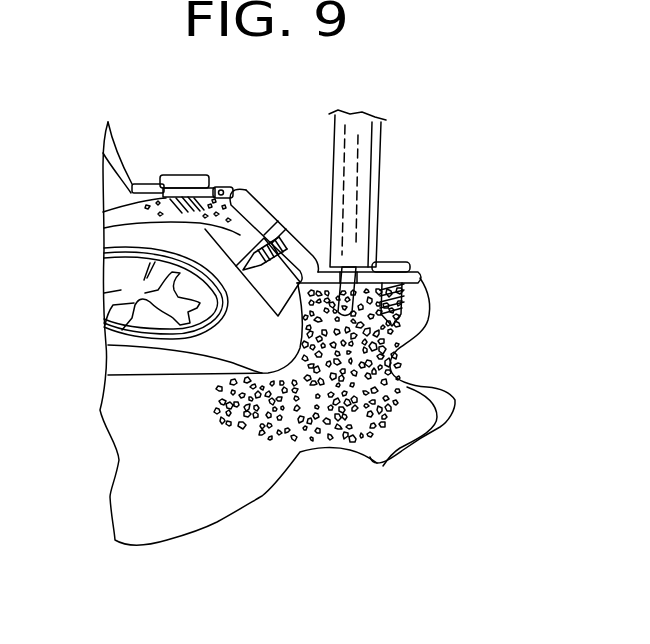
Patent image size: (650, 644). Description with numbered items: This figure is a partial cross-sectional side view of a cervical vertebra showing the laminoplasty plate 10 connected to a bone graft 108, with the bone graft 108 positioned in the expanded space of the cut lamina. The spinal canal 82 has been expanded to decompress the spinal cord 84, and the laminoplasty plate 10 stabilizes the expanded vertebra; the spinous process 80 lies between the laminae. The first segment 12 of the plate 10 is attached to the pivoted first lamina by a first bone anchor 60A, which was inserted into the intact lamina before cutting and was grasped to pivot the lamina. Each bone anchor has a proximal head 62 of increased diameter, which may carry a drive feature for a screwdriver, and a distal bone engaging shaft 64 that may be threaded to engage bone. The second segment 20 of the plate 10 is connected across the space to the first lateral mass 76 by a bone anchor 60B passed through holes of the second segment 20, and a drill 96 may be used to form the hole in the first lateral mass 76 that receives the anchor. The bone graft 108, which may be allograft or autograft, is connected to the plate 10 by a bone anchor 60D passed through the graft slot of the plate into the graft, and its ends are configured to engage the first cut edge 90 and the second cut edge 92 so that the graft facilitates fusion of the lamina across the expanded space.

The laminoplasty plate 10 is at (308, 182).
The first segment 12 is at (232, 186).
The second segment 20 is at (422, 277).
The first bone anchor 60A is at (200, 174).
The bone anchor 60B is at (405, 263).
The bone anchor 60D is at (285, 222).
The proximal head 62 is at (165, 172).
The distal bone engaging shaft 64 is at (112, 212).
The first lateral mass 76 is at (400, 332).
The spinous process 80 is at (120, 363).
The spinal canal 82 is at (112, 242).
The spinal cord 84 is at (104, 293).
The first cut edge 90 is at (236, 190).
The second cut edge 92 is at (297, 349).
The drill 96 is at (370, 143).
The bone graft 108 is at (268, 292).